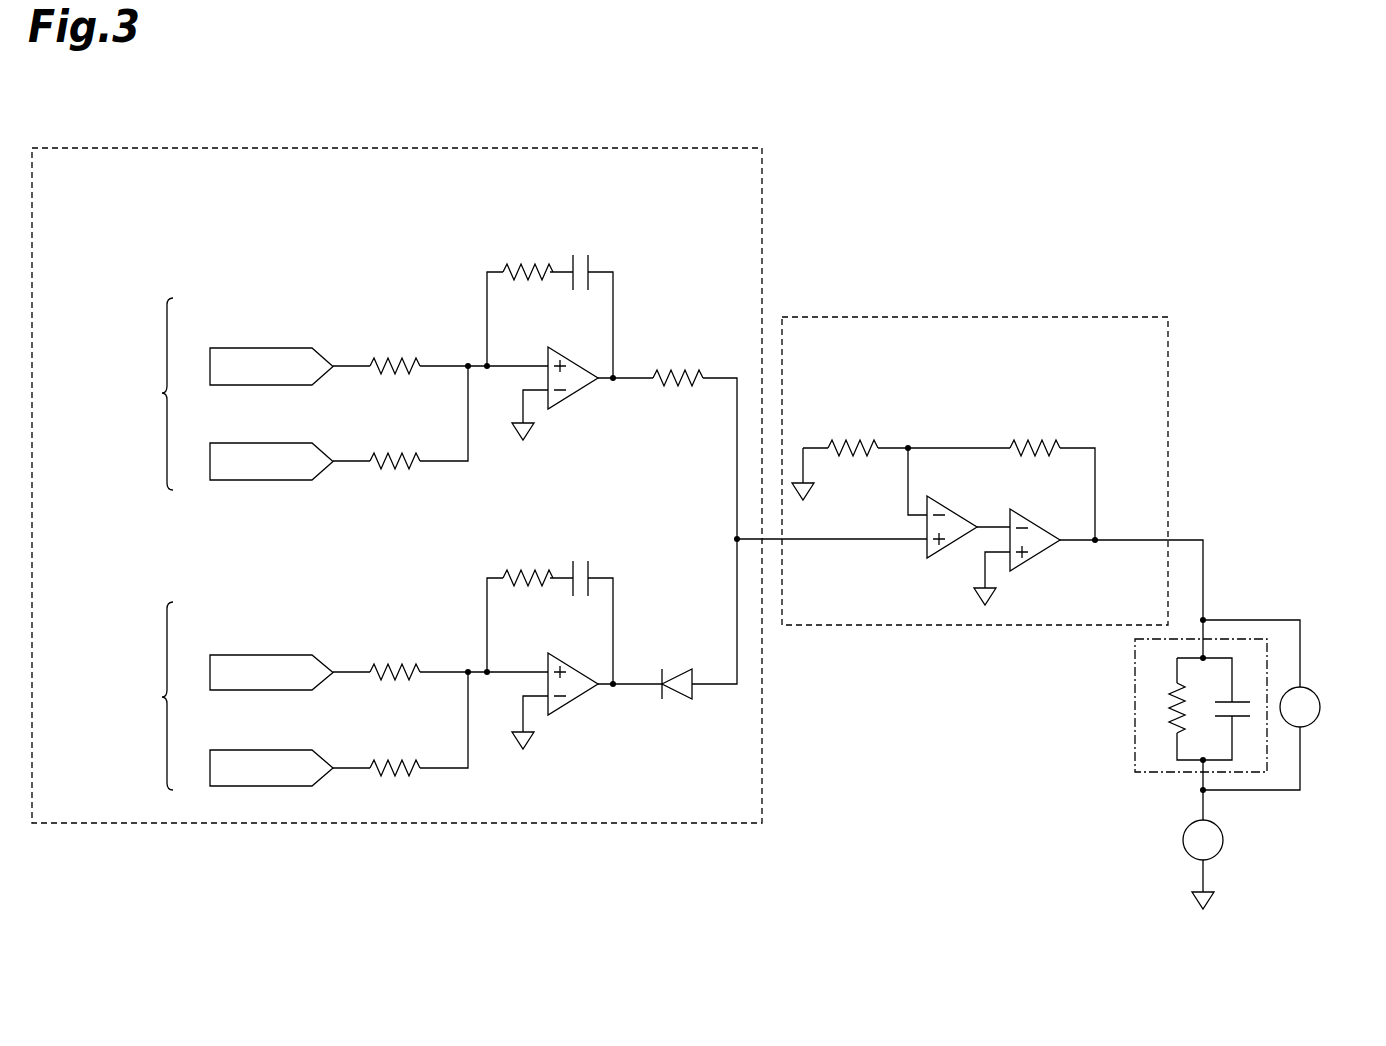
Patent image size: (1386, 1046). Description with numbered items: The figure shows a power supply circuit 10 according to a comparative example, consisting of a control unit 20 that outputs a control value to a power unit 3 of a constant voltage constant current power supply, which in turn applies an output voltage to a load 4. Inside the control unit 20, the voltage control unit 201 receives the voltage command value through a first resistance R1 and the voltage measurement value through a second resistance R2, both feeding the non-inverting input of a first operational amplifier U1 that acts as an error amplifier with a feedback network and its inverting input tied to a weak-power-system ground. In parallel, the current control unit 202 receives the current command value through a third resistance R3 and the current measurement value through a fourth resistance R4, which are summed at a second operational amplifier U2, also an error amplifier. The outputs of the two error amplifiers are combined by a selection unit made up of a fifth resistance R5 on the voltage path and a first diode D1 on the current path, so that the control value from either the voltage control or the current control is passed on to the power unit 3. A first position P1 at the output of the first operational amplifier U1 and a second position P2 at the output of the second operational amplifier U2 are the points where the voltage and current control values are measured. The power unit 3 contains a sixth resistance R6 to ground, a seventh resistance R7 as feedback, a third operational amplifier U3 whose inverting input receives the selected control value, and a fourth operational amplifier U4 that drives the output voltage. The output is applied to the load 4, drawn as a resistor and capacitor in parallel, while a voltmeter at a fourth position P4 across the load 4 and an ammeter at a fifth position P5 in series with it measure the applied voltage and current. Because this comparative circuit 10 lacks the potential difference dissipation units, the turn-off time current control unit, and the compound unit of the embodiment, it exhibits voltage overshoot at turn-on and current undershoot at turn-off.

The control unit 20 is at (208, 148).
The voltage control unit 201 is at (121, 331).
The current control unit 202 is at (121, 618).
The power unit 3 is at (882, 317).
The power supply circuit 10 is at (1262, 271).
The load 4 is at (1135, 730).
The first position P1 is at (632, 373).
The second position P2 is at (632, 679).
The fourth position P4 is at (1320, 686).
The fifth position P5 is at (1181, 840).
The first resistance R1 is at (440, 348).
The second resistance R2 is at (400, 417).
The third resistance R3 is at (440, 654).
The fourth resistance R4 is at (400, 724).
The fifth resistance R5 is at (695, 438).
The sixth resistance R6 is at (901, 453).
The seventh resistance R7 is at (1052, 473).
The first operational amplifier U1 is at (555, 385).
The second operational amplifier U2 is at (555, 692).
The third operational amplifier U3 is at (968, 517).
The fourth operational amplifier U4 is at (1034, 550).
The first diode D1 is at (698, 619).